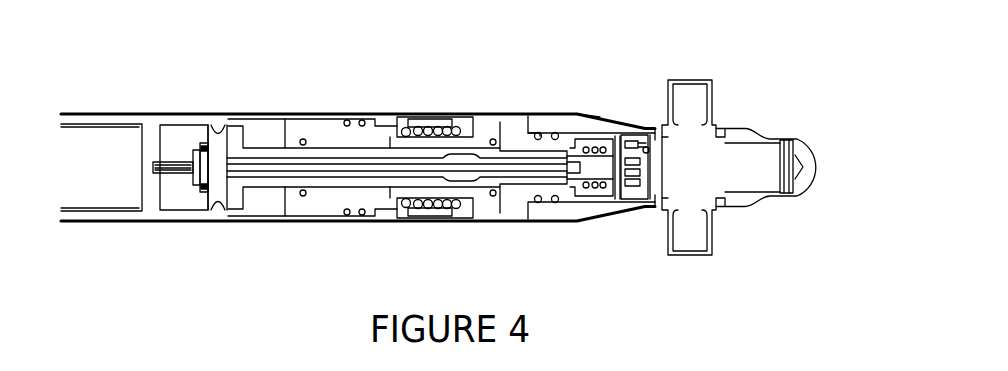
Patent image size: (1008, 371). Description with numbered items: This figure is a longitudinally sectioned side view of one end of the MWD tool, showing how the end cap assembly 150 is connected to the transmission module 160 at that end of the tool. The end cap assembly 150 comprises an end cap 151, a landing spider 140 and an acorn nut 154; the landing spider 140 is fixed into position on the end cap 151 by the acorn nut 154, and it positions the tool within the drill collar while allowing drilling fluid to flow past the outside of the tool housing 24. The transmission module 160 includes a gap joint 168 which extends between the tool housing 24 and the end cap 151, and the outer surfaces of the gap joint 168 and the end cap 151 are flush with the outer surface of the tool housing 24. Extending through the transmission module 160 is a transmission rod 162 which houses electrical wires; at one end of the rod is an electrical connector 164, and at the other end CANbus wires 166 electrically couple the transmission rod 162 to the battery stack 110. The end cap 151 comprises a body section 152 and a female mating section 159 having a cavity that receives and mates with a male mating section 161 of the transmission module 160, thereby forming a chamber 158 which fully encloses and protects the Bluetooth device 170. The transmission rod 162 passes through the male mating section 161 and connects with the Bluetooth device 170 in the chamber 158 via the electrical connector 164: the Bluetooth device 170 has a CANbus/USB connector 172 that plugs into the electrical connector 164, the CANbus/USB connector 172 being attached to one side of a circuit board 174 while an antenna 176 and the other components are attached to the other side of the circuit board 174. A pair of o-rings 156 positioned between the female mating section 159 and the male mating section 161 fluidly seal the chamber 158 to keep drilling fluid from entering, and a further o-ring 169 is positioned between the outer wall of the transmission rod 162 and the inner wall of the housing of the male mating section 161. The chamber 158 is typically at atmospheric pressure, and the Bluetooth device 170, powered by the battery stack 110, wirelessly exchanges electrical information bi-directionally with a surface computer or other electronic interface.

The tool housing 24 is at (228, 113).
The battery stack 110 is at (91, 139).
The CANbus wires 166 is at (172, 165).
The transmission module 160 is at (377, 205).
The transmission rod 162 is at (492, 172).
The electrical connector 164 is at (590, 173).
The o-ring 169 is at (585, 145).
The male mating section 161 is at (555, 188).
The gap joint 168 is at (510, 110).
The o-rings 156 is at (538, 128).
The female mating section 159 is at (578, 117).
The CANbus/USB connector 172 is at (613, 173).
The circuit board 174 is at (622, 177).
The Bluetooth device 170 is at (635, 140).
The antenna 176 is at (647, 147).
The end cap assembly 150 is at (731, 103).
The landing spider 140 is at (687, 88).
The end cap 151 is at (753, 138).
The body section 152 is at (725, 170).
The acorn nut 154 is at (802, 147).
The chamber 158 is at (650, 180).